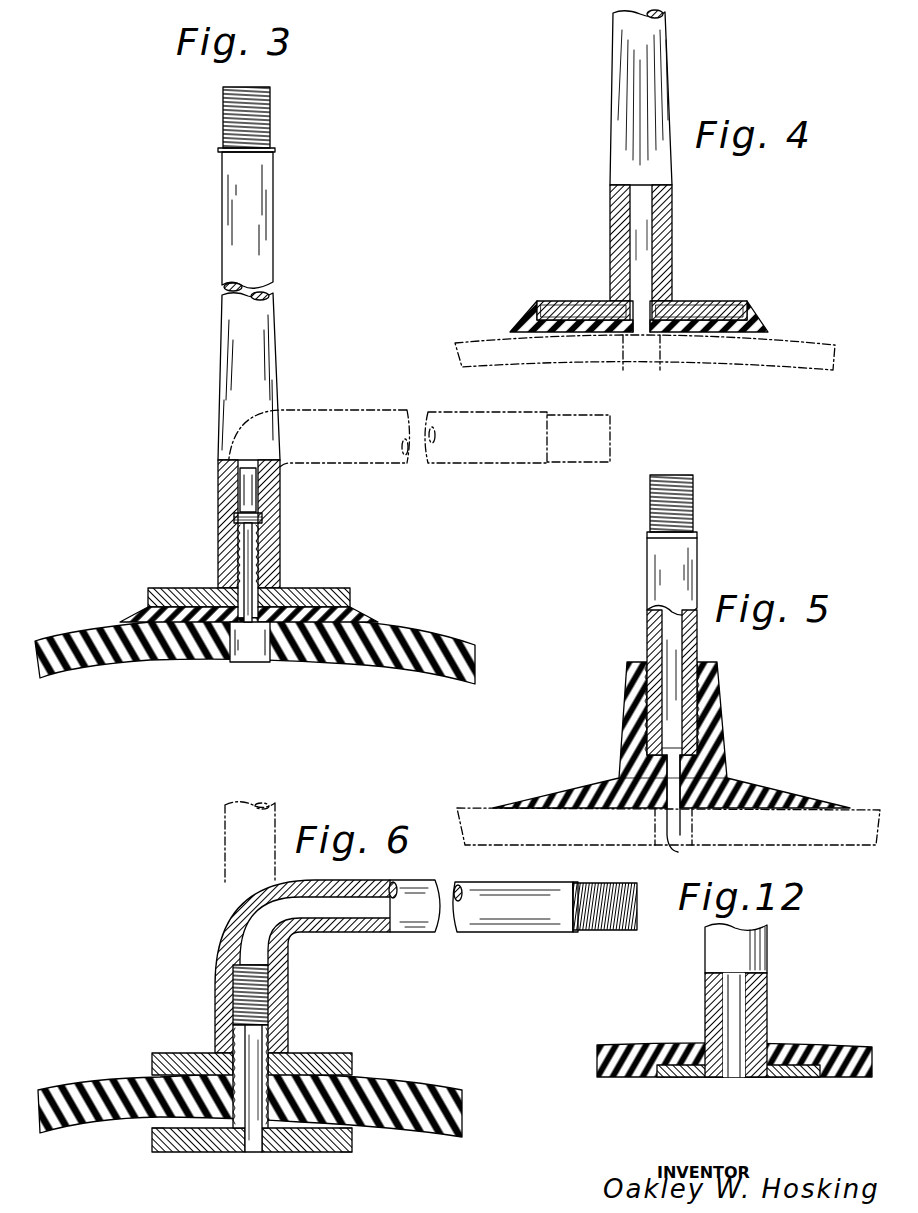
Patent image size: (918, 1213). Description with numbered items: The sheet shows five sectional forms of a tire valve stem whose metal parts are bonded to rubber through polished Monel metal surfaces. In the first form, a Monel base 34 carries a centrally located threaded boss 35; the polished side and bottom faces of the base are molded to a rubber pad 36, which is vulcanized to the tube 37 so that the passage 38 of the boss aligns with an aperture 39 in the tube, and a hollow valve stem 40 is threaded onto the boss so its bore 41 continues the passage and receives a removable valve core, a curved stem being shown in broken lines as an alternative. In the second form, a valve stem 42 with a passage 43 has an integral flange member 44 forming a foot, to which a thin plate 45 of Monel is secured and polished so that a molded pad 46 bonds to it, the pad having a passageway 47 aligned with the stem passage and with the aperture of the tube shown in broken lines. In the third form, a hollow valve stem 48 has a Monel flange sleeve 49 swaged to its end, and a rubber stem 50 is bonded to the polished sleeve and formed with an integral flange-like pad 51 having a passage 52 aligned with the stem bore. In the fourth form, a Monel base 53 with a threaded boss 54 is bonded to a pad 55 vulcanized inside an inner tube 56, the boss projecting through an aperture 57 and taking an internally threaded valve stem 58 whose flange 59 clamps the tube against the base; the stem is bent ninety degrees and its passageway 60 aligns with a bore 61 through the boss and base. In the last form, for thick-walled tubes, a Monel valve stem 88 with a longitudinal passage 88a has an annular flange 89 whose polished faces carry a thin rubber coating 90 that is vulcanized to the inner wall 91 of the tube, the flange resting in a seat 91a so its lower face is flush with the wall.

In FIG. 3, the base 34 is at (322, 600).
In FIG. 3, the threaded boss 35 is at (268, 562).
In FIG. 3, the pad 36 is at (357, 610).
In FIG. 3, the tube 37 is at (430, 640).
In FIG. 3, the passage 38 is at (250, 562).
In FIG. 3, the aperture 39 is at (247, 652).
In FIG. 3, the hollow valve stem 40 is at (263, 253).
In FIG. 3, the bore 41 is at (242, 482).
In FIG. 4, the valve stem 42 is at (660, 88).
In FIG. 4, the passage 43 is at (640, 212).
In FIG. 4, the flange member 44 is at (725, 310).
In FIG. 4, the thin plate 45 is at (715, 335).
In FIG. 4, the pad 46 is at (760, 326).
In FIG. 4, the passageway 47 is at (640, 330).
In FIG. 5, the hollow valve stem 48 is at (690, 560).
In FIG. 5, the flange sleeve 49 is at (700, 672).
In FIG. 5, the rubber stem 50 is at (720, 722).
In FIG. 5, the pad 51 is at (742, 790).
In FIG. 5, the passage 52 is at (679, 812).
In FIG. 6, the base 53 is at (305, 1148).
In FIG. 6, the threaded boss 54 is at (265, 1045).
In FIG. 6, the pad 55 is at (355, 1142).
In FIG. 6, the inner tube 56 is at (416, 1092).
In FIG. 6, the aperture 57 is at (228, 1130).
In FIG. 6, the valve stem 58 is at (365, 922).
In FIG. 6, the flange 59 is at (338, 1060).
In FIG. 6, the passageway 60 is at (317, 905).
In FIG. 6, the bore 61 is at (253, 1140).
In FIG. 12, the valve stem 88 is at (770, 990).
In FIG. 12, the longitudinal passage 88a is at (738, 1060).
In FIG. 12, the annular flange 89 is at (800, 1077).
In FIG. 12, the rubber coating 90 is at (770, 1048).
In FIG. 12, the inner wall 91 is at (820, 1052).
In FIG. 12, the seat 91a is at (808, 1077).